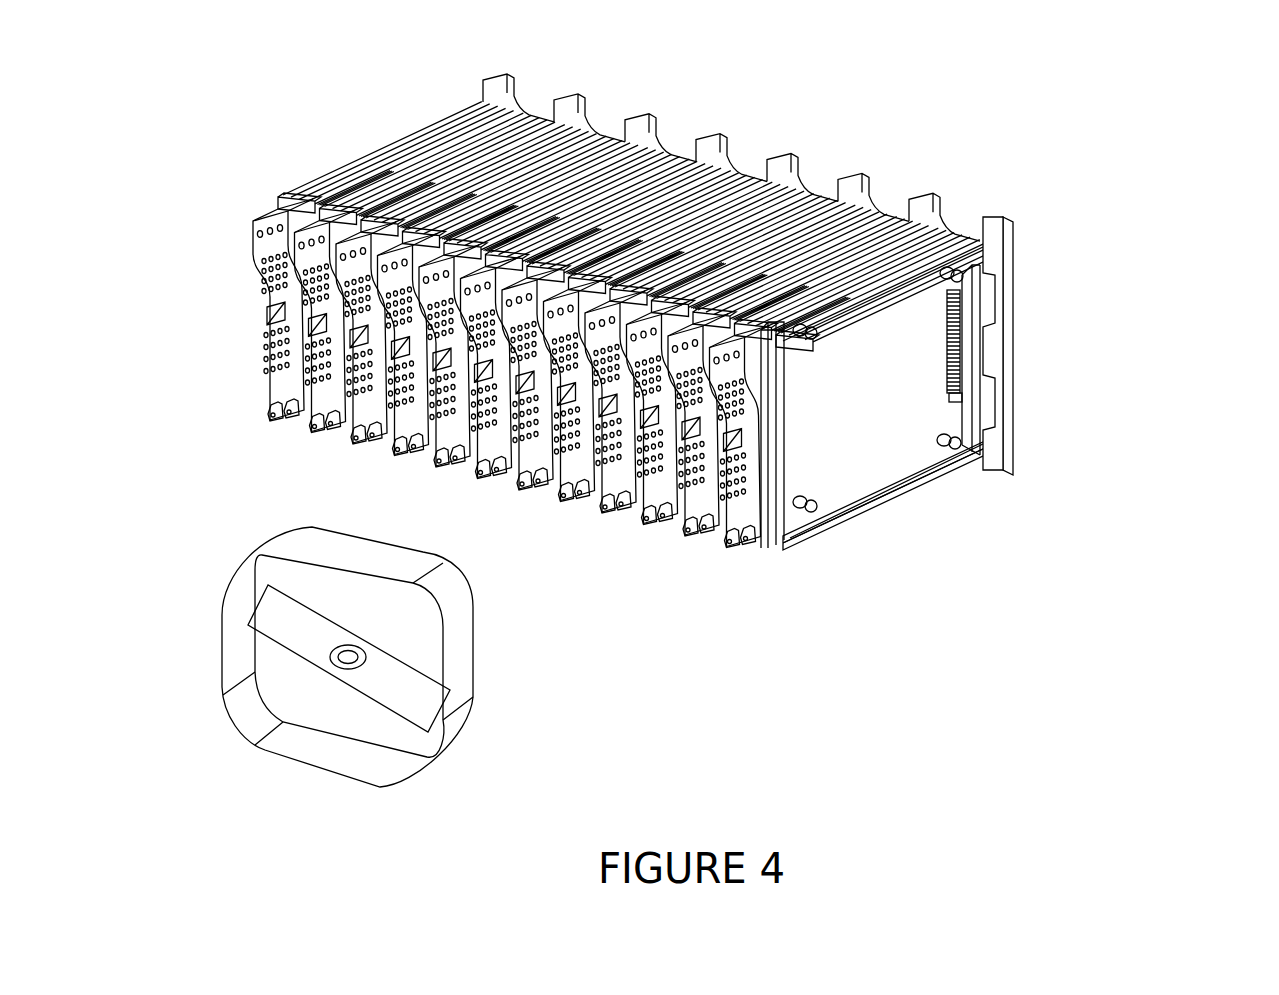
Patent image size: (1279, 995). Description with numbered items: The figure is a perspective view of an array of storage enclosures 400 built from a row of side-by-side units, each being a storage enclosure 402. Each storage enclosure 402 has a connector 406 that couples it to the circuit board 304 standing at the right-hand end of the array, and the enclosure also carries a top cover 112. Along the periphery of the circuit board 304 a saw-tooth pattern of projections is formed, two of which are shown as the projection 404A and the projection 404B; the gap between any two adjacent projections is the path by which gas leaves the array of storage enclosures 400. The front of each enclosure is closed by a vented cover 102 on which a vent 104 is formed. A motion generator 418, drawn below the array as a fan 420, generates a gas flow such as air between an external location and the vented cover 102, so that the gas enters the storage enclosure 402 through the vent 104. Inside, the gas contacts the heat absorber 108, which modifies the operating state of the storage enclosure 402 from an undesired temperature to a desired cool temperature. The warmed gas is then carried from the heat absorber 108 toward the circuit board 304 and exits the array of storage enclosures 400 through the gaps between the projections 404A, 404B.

The projection 404A is at (647, 104).
The projection 404B is at (722, 143).
The storage enclosure 402 is at (980, 349).
The circuit board 304 is at (990, 220).
The connector 406 is at (970, 324).
The top cover 112 is at (946, 421).
The heat absorber 108 is at (767, 423).
The vent 104 is at (700, 478).
The vented cover 102 is at (738, 508).
The fan 420 is at (512, 635).
The motion generator 418 is at (453, 675).
The array of storage enclosures 400 is at (746, 413).